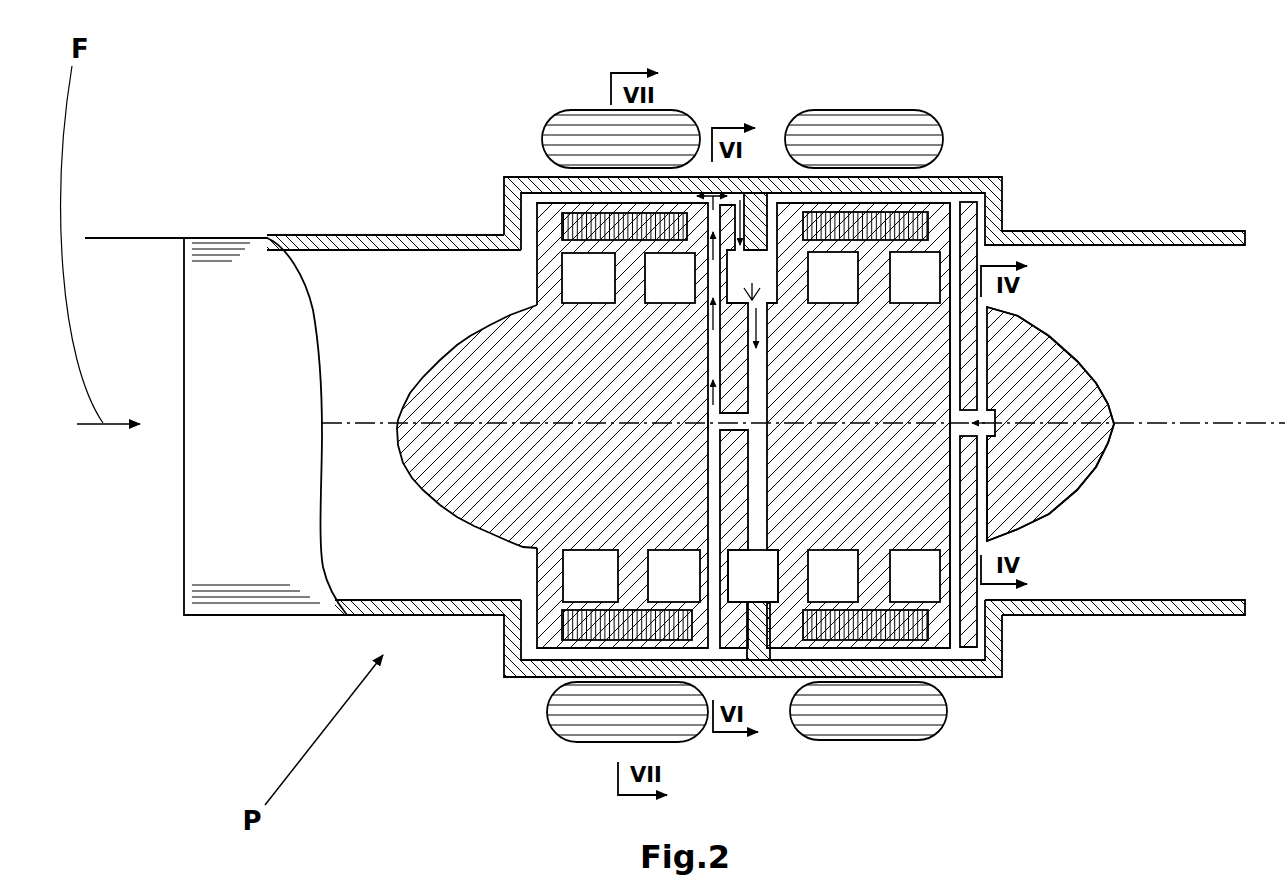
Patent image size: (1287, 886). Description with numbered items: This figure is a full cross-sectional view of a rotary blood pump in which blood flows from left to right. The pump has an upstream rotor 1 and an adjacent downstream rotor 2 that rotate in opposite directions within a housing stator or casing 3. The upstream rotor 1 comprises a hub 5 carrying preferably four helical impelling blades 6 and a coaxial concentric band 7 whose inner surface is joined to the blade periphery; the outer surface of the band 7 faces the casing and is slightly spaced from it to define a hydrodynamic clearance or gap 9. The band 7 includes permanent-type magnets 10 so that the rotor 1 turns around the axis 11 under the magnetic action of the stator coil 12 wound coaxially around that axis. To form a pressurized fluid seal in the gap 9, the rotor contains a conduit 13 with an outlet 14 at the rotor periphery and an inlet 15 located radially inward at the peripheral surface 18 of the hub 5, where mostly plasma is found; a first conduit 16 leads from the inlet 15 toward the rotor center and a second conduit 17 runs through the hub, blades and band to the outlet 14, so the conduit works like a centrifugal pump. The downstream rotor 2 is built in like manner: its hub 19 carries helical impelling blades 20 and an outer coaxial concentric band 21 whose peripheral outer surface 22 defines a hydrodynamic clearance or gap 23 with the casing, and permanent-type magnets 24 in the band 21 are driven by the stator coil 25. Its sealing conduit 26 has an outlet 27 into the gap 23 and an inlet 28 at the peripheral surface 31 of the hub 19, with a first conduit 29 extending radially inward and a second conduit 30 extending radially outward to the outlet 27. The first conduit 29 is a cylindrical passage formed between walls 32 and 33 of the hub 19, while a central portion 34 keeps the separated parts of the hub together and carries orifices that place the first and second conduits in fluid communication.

The upstream rotor 1 is at (425, 283).
The downstream rotor 2 is at (1137, 338).
The housing stator or casing 3 is at (232, 325).
The hub 5 is at (497, 373).
The impelling blades 6 is at (532, 278).
The band 7 is at (577, 225).
The hydrodynamic clearance or gap 9 is at (543, 653).
The permanent-type magnets 10 is at (588, 238).
The axis 11 is at (357, 422).
The stator coil 12 is at (598, 138).
The conduit 13 is at (715, 432).
The outlet 14 is at (753, 552).
The inlet 15 is at (762, 556).
The first conduit 16 is at (752, 380).
The second conduit 17 is at (710, 372).
The peripheral surface of the hub 18 is at (680, 548).
The hub 19 is at (1053, 330).
The impelling blades 20 is at (768, 245).
The outer coaxial concentric band 21 is at (803, 290).
The peripheral outer surface 22 is at (880, 645).
The hydrodynamic clearance or gap 23 is at (860, 653).
The permanent-type magnets 24 is at (857, 212).
The stator coil 25 is at (913, 125).
The conduit 26 is at (979, 385).
The outlet 27 is at (968, 600).
The inlet 28 is at (979, 543).
The first conduit 29 is at (1030, 350).
The second conduit 30 is at (953, 375).
The peripheral surface of the hub 31 is at (917, 578).
The wall 32 is at (979, 504).
The wall 33 is at (979, 471).
The central portion 34 is at (975, 420).